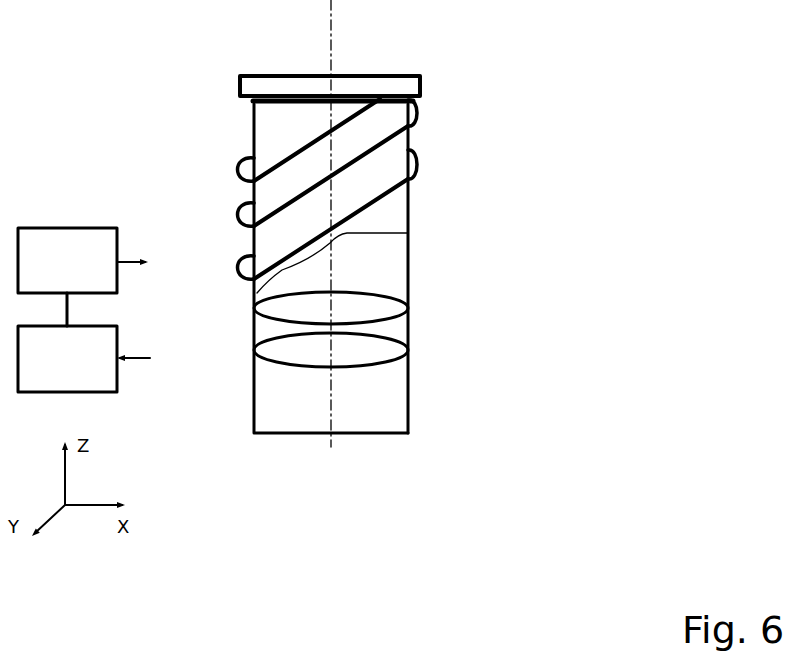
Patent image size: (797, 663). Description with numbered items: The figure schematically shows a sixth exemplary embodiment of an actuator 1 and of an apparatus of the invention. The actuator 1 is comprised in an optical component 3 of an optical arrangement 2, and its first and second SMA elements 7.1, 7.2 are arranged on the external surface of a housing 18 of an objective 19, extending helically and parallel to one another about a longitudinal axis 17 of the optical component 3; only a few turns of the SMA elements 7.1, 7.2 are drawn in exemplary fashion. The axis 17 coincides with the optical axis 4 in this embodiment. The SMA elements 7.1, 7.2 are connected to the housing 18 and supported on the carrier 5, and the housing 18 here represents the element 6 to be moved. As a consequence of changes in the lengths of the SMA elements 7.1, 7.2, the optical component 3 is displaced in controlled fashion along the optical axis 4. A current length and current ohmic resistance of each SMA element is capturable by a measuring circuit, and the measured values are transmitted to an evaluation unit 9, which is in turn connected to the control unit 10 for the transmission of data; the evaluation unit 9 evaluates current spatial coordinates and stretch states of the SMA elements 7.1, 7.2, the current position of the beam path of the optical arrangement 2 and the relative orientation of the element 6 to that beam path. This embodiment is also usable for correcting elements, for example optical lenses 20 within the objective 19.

The actuator 1 is at (339, 183).
The optical arrangement 2 is at (172, 90).
The optical component 3 is at (452, 203).
The optical axis 4 is at (373, 223).
The axis 17 is at (332, 68).
The carrier 5 is at (303, 74).
The element to be moved 6 is at (413, 140).
The housing 18 is at (464, 268).
The first SMA element 7.1 is at (416, 114).
The second SMA element 7.2 is at (241, 258).
The evaluation unit 9 is at (84, 359).
The control unit 10 is at (83, 277).
The objective 19 is at (410, 283).
The optical lenses 20 is at (378, 311).